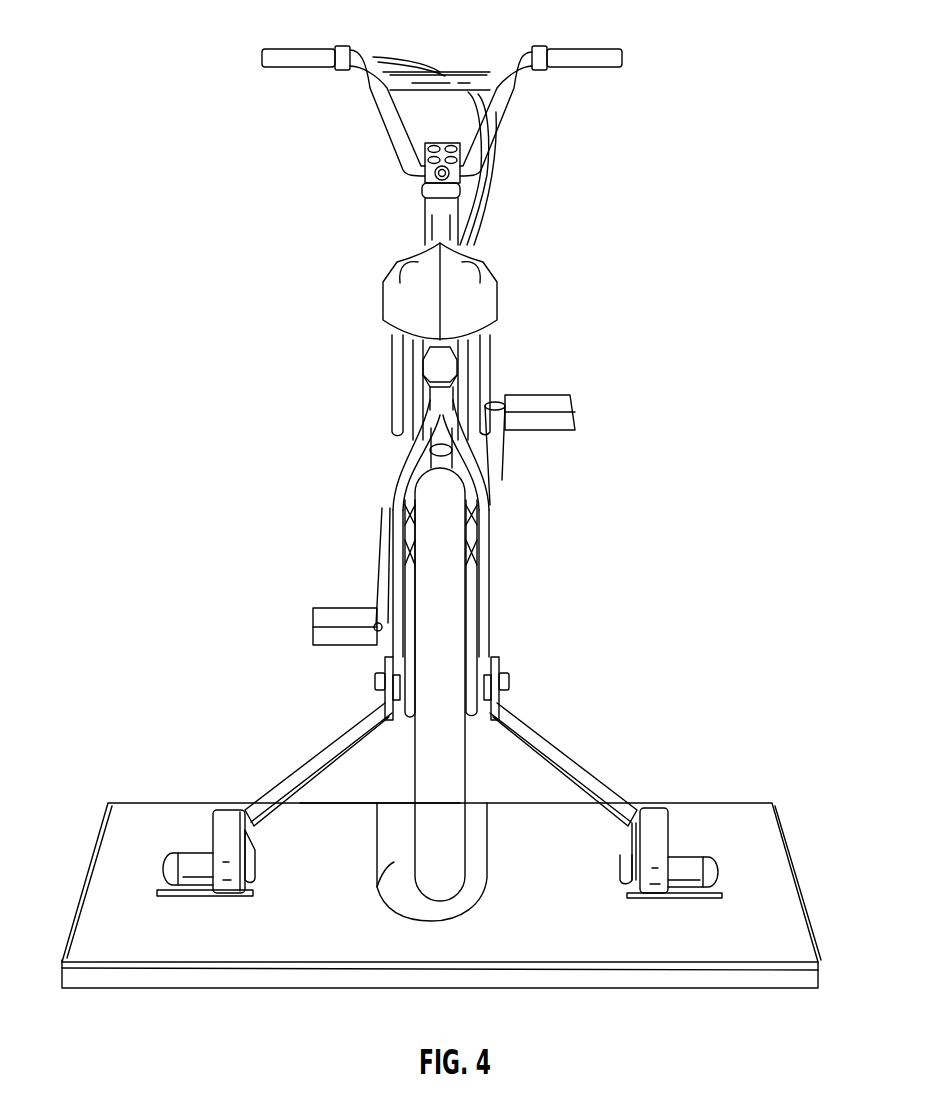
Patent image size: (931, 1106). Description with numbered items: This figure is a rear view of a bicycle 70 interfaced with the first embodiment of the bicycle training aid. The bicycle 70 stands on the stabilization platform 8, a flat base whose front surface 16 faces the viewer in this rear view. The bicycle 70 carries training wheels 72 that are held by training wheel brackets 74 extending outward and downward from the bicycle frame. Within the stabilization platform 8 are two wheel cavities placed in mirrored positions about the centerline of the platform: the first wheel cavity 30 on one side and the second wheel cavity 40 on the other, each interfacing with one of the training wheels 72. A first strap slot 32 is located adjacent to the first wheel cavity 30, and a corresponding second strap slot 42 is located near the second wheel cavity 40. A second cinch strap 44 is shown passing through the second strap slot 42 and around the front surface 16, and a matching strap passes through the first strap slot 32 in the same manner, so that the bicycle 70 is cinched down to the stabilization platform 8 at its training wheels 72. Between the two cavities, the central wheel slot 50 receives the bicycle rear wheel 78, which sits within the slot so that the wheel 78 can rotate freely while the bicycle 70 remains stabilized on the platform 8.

The stabilization platform 8 is at (659, 945).
The front surface 16 is at (358, 801).
The first wheel cavity 30 is at (700, 867).
The first strap slot 32 is at (680, 898).
The second wheel cavity 40 is at (172, 872).
The second strap slot 42 is at (215, 897).
The second cinch strap 44 is at (250, 848).
The central wheel slot 50 is at (489, 885).
The bicycle 70 is at (489, 366).
The training wheels 72 is at (229, 822).
The training wheel brackets 74 is at (307, 767).
The bicycle rear wheel 78 is at (467, 788).